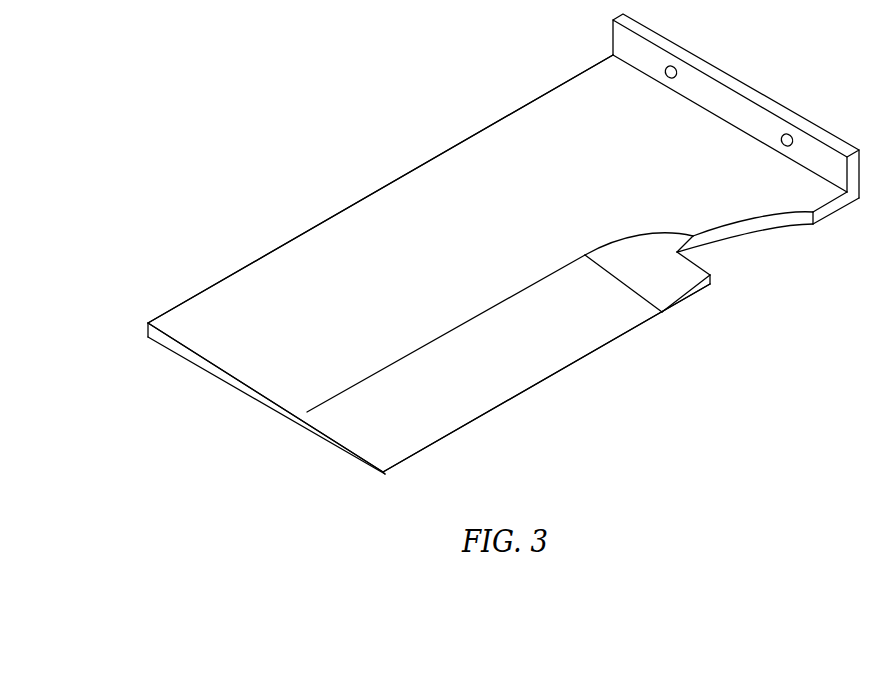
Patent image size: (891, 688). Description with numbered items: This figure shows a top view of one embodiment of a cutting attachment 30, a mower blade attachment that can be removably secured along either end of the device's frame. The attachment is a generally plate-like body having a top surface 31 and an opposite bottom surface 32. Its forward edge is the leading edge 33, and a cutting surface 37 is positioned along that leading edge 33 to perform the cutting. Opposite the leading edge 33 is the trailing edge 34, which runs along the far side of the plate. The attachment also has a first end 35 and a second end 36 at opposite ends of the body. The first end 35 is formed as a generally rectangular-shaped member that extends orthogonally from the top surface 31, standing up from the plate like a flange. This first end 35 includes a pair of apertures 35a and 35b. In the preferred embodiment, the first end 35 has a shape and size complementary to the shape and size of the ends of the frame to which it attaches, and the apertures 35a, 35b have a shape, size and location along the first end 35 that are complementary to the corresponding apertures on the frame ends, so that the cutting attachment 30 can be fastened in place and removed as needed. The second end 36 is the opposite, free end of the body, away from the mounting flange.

The cutting attachment 30 is at (312, 118).
The top surface 31 is at (492, 232).
The bottom surface 32 is at (237, 388).
The leading edge 33 is at (827, 210).
The trailing edge 34 is at (443, 151).
The first end 35 is at (740, 108).
The aperture 35a is at (667, 78).
The aperture 35b is at (785, 146).
The second end 36 is at (195, 355).
The cutting surface 37 is at (500, 368).